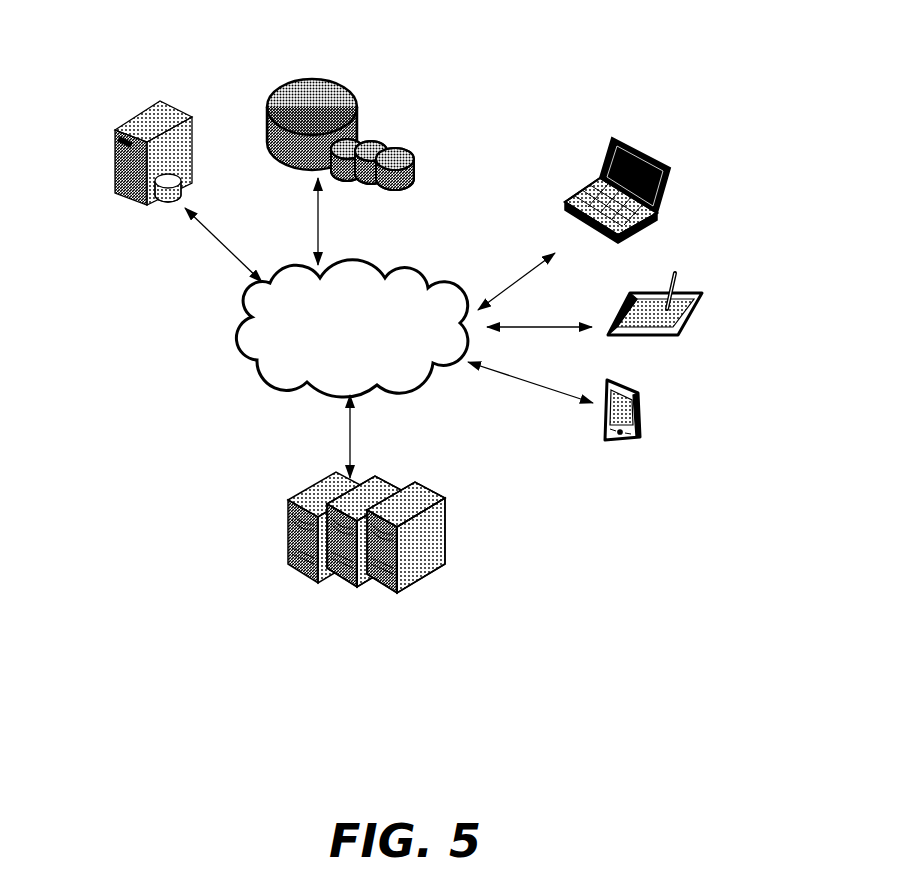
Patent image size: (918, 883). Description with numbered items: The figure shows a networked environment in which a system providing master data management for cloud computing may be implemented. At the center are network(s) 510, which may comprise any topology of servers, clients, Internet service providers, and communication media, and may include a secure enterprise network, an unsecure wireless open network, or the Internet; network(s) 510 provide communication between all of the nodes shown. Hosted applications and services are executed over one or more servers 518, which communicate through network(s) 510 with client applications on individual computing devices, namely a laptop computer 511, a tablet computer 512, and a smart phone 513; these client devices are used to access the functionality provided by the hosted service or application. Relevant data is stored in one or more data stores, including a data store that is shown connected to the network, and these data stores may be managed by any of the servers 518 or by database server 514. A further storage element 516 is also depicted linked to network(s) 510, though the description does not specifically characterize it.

The network(s) 510 is at (358, 249).
The laptop computer 511 is at (651, 133).
The tablet computer 512 is at (685, 261).
The smart phone 513 is at (655, 380).
The database server 514 is at (158, 222).
The database storage 516 is at (328, 53).
The servers 518 is at (315, 477).